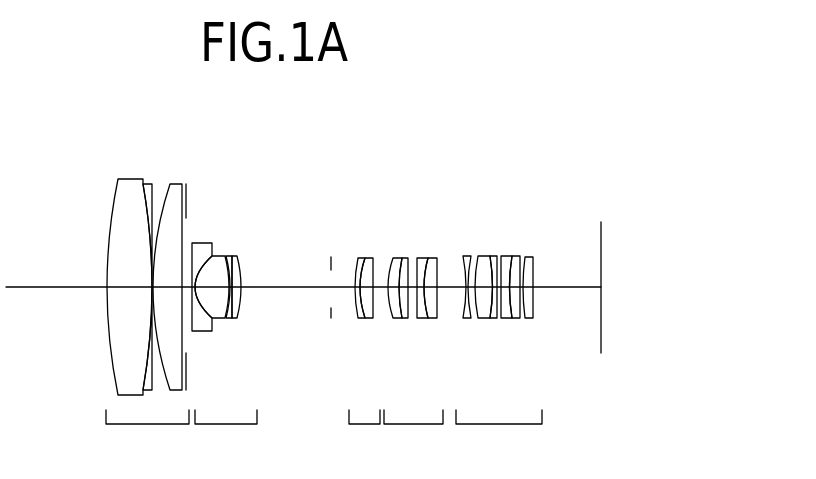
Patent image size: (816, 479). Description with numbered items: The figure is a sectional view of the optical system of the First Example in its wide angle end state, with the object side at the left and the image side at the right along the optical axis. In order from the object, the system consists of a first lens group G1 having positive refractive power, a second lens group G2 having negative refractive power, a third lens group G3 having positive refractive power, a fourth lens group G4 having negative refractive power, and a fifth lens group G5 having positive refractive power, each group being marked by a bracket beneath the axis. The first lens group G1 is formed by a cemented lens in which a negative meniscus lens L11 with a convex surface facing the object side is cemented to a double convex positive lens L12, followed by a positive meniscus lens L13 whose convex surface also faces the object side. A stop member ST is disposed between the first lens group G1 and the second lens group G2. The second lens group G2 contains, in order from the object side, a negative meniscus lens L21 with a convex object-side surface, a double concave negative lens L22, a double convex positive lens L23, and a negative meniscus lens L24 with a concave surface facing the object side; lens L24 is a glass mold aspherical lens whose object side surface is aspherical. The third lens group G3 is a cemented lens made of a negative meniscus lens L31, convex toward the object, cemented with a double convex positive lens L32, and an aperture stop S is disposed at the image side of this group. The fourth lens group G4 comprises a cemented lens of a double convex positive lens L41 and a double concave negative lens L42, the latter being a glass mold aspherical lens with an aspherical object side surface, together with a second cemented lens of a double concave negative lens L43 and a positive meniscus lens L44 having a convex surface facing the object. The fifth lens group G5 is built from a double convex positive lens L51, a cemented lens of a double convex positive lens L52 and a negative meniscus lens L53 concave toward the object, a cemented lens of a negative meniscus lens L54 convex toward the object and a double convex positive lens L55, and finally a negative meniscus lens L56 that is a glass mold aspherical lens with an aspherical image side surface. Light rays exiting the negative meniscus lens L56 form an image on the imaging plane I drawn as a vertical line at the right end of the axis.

The negative meniscus lens L11 is at (127, 179).
The double convex positive lens L12 is at (145, 183).
The positive meniscus lens L13 is at (182, 183).
The stop member ST is at (185, 185).
The negative meniscus lens L21 is at (200, 242).
The double concave negative lens L22 is at (217, 255).
The double convex positive lens L23 is at (229, 255).
The negative meniscus lens L24 is at (236, 255).
The aperture stop S is at (328, 258).
The negative meniscus lens L31 is at (358, 258).
The double convex positive lens L32 is at (366, 258).
The double convex positive lens L41 is at (395, 258).
The double concave negative lens L42 is at (403, 258).
The double concave negative lens L43 is at (425, 258).
The positive meniscus lens L44 is at (437, 258).
The double convex positive lens L51 is at (467, 256).
The double convex positive lens L52 is at (484, 256).
The negative meniscus lens L53 is at (494, 256).
The negative meniscus lens L54 is at (506, 256).
The double convex positive lens L55 is at (516, 256).
The negative meniscus lens L56 is at (530, 257).
The imaging plane I is at (605, 228).
The first lens group G1 is at (147, 431).
The second lens group G2 is at (226, 431).
The third lens group G3 is at (364, 431).
The fourth lens group G4 is at (413, 431).
The fifth lens group G5 is at (499, 431).